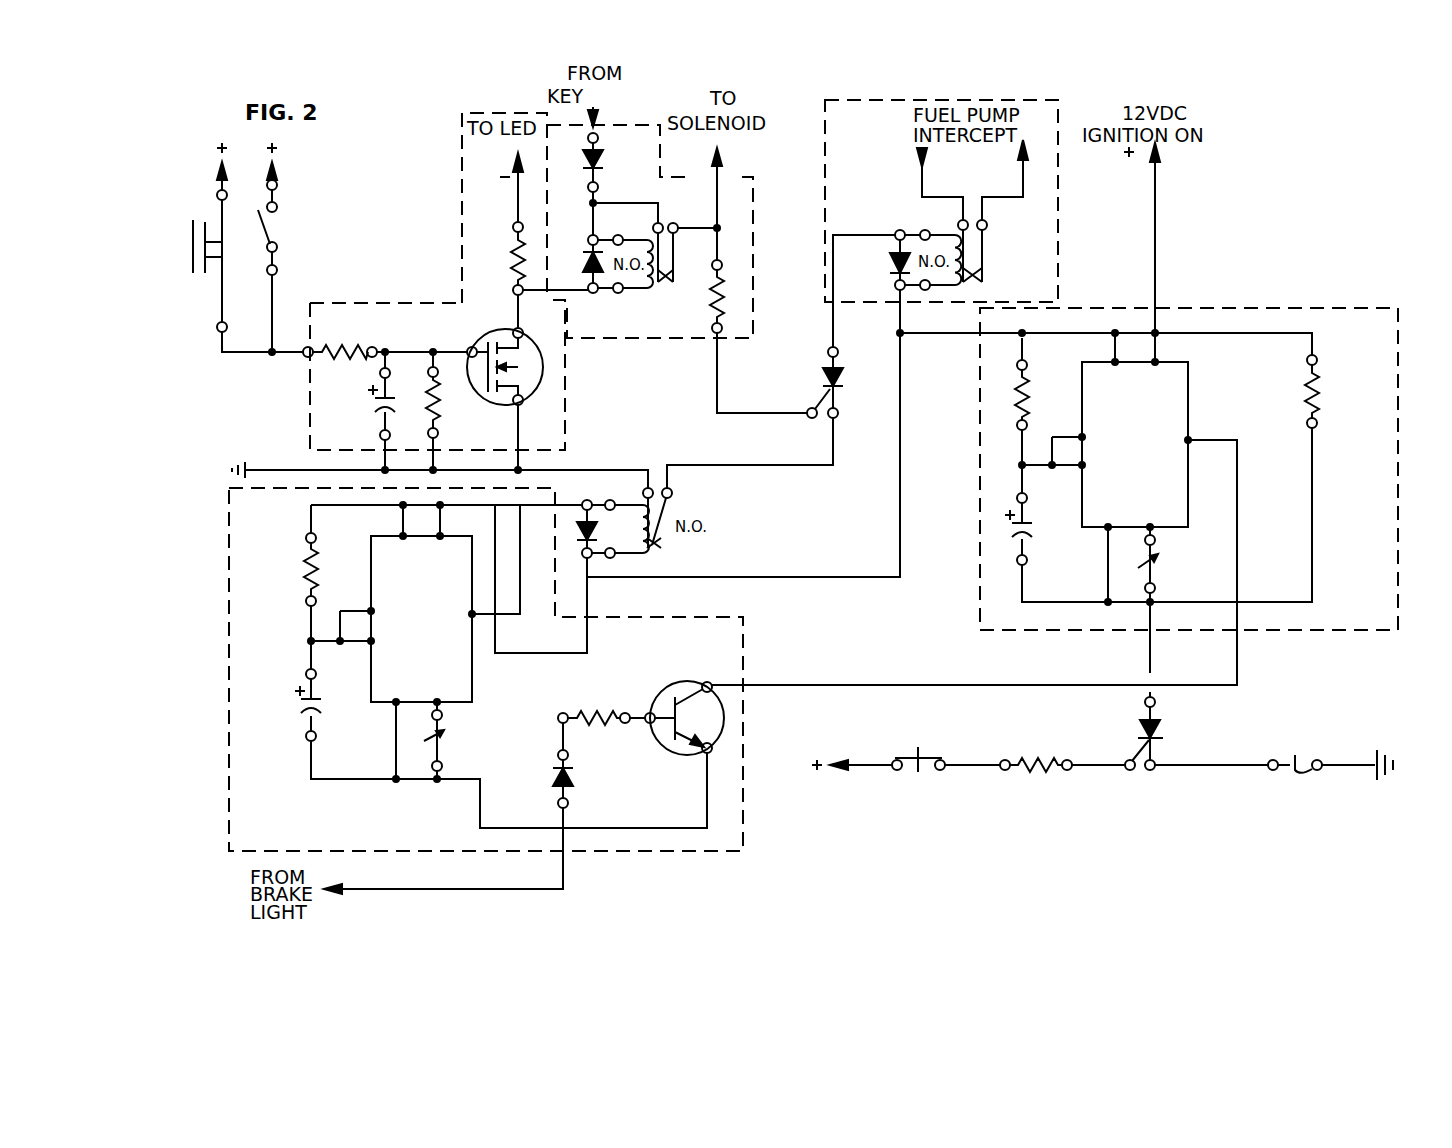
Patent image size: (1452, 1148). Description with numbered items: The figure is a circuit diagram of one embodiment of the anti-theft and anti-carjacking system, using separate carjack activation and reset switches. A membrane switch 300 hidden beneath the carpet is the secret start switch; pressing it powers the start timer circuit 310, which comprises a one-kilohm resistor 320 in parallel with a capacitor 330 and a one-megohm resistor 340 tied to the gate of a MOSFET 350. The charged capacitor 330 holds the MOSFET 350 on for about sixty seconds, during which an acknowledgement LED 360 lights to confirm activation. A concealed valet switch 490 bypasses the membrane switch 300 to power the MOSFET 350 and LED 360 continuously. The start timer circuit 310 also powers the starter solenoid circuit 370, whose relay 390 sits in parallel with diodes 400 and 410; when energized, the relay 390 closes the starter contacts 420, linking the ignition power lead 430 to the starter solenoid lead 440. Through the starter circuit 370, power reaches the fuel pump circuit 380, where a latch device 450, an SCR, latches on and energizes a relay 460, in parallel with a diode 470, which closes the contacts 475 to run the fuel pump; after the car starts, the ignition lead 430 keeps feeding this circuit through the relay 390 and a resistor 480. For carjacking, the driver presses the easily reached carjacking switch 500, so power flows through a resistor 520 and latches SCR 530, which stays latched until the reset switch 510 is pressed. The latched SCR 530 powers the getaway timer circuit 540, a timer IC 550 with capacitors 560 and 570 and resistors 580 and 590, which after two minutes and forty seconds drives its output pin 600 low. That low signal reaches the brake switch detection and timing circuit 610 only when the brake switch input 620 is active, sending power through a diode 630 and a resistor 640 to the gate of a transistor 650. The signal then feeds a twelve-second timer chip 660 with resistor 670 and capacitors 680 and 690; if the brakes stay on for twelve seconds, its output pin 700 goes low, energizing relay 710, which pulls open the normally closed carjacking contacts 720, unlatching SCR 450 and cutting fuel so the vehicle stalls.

The membrane switch 300 is at (190, 255).
The start timer circuit 310 is at (455, 302).
The 1 KΩ resistor 320 is at (340, 345).
The 100 mFd capacitor 330 is at (372, 400).
The 1 MΩ resistor 340 is at (440, 398).
The MOSFET 350 is at (540, 388).
The acknowledgement LED 360 is at (506, 233).
The starter solenoid circuit 370 is at (753, 178).
The fuel pump circuit 380 is at (995, 100).
The 75 milliamp relay 390 is at (636, 293).
The diode 400 is at (526, 258).
The diode 410 is at (598, 162).
The starter contacts 420 is at (668, 285).
The ignition power lead 430 is at (611, 105).
The starter solenoid lead 440 is at (722, 196).
The latch device 450 is at (825, 382).
The 75 milliamp relay 460 is at (956, 232).
The diode 470 is at (894, 271).
The contacts 475 is at (985, 272).
The 1 KΩ resistor 480 is at (727, 300).
The valet switch 490 is at (276, 222).
The carjacking switch 500 is at (920, 775).
The carjack reset switch 510 is at (1298, 773).
The 1 KΩ resistor 520 is at (1042, 775).
The SCR 530 is at (1144, 723).
The getaway timer circuit 540 is at (1260, 306).
The 555 timer IC 550 is at (1112, 446).
The 100 mFd capacitor 560 is at (1030, 527).
The 0.01 mFd capacitor 570 is at (1185, 582).
The 470 Ω resistor 580 is at (1318, 402).
The 1 MΩ resistor 590 is at (1029, 392).
The output pin-3 600 is at (1238, 452).
The brake switch detection and timing circuit 610 is at (228, 562).
The brake switch input 620 is at (443, 851).
The diode 630 is at (552, 784).
The 1 KΩ resistor 640 is at (590, 708).
The transistor 650 is at (660, 746).
The 555 timer chip 660 is at (399, 615).
The 1 MΩ resistor 670 is at (305, 578).
The 10 mFd capacitor 680 is at (322, 701).
The 0.01 mFd capacitor 690 is at (468, 757).
The output pin-3 700 is at (508, 618).
The 44 milliamp relay 710 is at (617, 576).
The carjacking contacts 720 is at (661, 545).